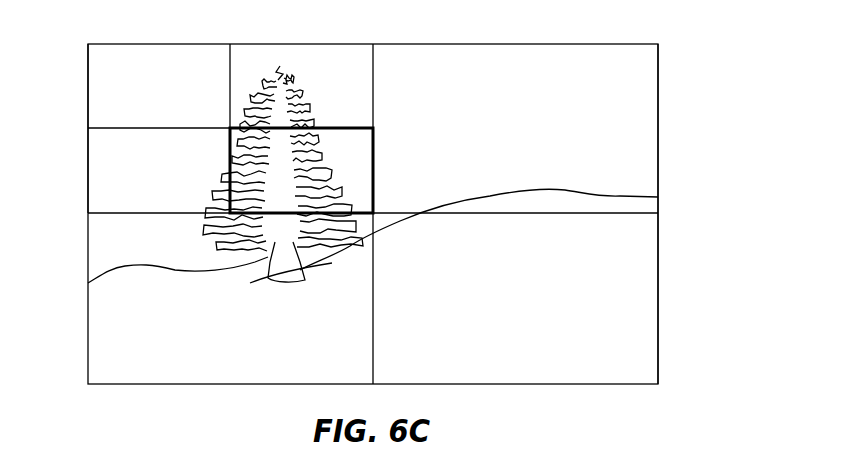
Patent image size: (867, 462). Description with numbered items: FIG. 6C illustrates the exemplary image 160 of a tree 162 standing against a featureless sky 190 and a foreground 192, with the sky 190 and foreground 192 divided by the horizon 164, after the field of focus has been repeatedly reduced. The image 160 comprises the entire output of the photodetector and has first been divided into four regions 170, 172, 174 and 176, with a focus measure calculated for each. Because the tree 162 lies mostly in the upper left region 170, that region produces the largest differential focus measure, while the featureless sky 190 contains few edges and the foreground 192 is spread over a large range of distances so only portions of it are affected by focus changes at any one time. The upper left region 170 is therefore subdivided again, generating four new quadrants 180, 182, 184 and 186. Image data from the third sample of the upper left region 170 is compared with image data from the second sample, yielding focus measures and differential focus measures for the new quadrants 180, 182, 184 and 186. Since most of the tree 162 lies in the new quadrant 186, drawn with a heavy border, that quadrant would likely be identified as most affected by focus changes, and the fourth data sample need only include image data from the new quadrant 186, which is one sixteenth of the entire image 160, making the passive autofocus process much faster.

The image 160 is at (658, 82).
The tree 162 is at (300, 100).
The horizon 164 is at (590, 195).
The upper left region 170 is at (88, 78).
The lower left region 172 is at (88, 249).
The upper right region 174 is at (658, 106).
The lower right region 176 is at (658, 272).
The new quadrant 180 is at (88, 101).
The new quadrant 182 is at (373, 70).
The new quadrant 184 is at (88, 163).
The new quadrant 186 is at (373, 155).
The featureless sky 190 is at (565, 111).
The foreground 192 is at (565, 345).